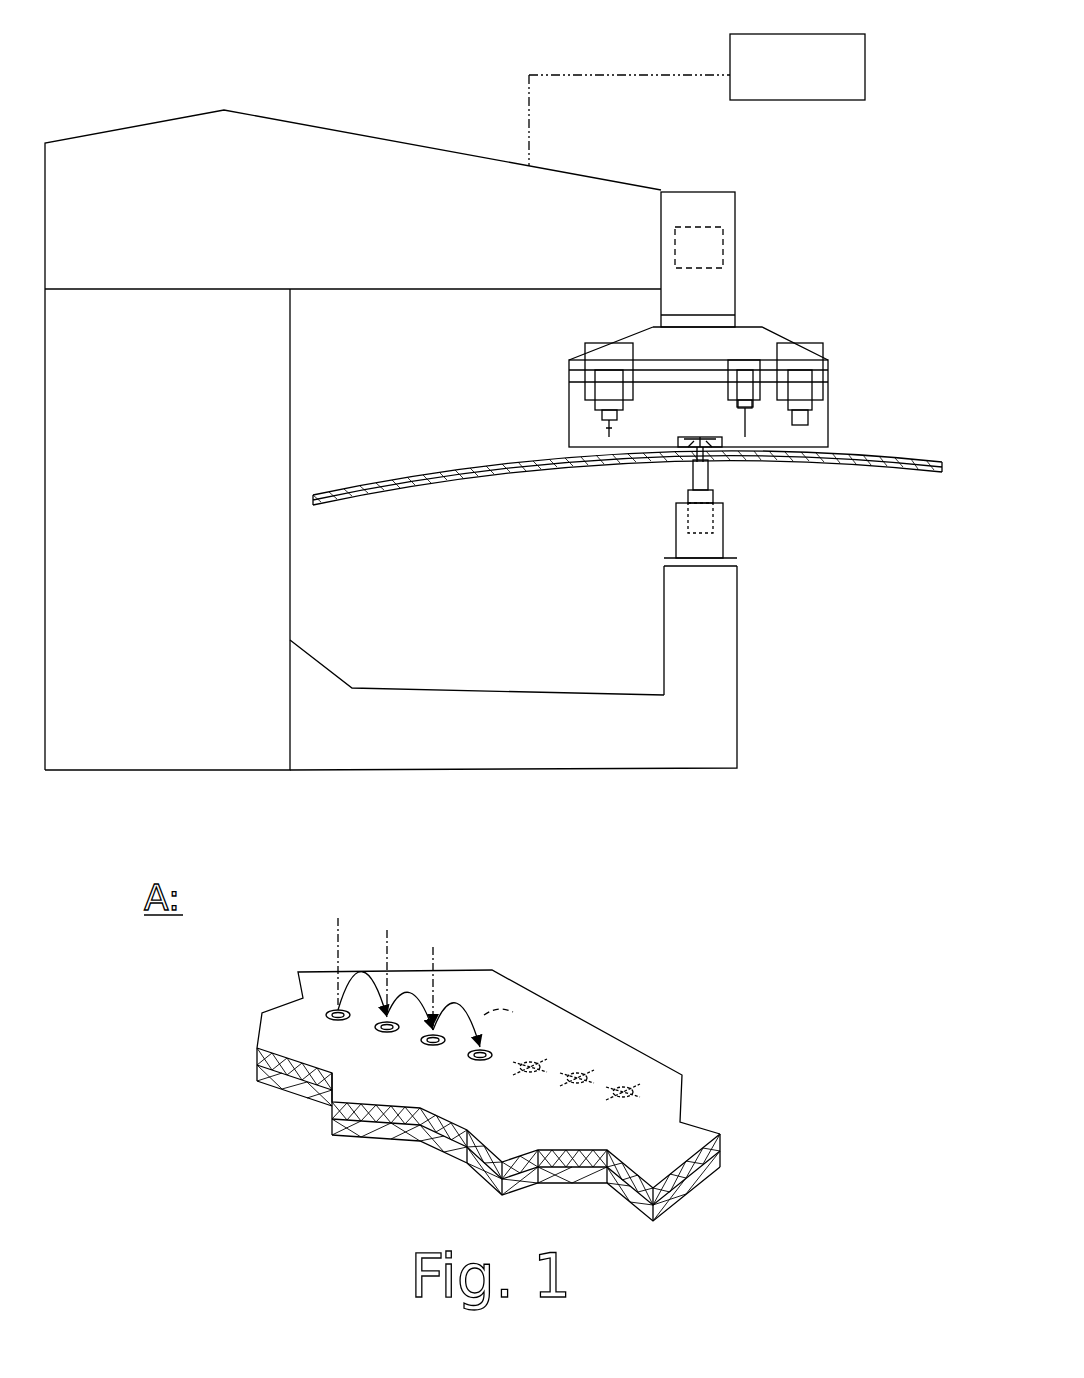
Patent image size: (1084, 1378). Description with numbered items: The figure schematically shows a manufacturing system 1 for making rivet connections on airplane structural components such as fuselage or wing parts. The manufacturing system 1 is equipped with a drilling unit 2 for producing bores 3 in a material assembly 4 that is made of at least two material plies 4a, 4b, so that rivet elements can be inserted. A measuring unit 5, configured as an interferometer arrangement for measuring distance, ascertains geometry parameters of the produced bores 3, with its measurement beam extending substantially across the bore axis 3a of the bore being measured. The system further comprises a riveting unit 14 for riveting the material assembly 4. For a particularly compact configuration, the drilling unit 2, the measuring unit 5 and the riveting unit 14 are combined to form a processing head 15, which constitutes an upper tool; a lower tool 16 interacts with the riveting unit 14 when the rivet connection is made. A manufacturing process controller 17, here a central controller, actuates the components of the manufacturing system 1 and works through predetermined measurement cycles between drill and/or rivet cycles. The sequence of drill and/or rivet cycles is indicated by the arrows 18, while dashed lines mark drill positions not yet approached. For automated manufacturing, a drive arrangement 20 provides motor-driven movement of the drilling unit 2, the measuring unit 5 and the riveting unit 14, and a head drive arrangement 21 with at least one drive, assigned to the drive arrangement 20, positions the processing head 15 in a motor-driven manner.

The manufacturing system 1 is at (186, 68).
The drilling unit 2 is at (585, 343).
The bores 3 is at (421, 1040).
The bore axis 3a is at (433, 947).
The material assembly 4 is at (875, 442).
The material ply 4a is at (723, 1153).
The material ply 4b is at (693, 1187).
The measuring unit 5 is at (753, 365).
The riveting unit 14 is at (825, 343).
The processing head 15 is at (642, 330).
The lower tool 16 is at (746, 521).
The manufacturing process controller 17 is at (817, 88).
The sequence of drill and/or rivet cycles 18 is at (458, 1000).
The drive arrangement 20 is at (777, 229).
The head drive arrangement 21 is at (707, 245).